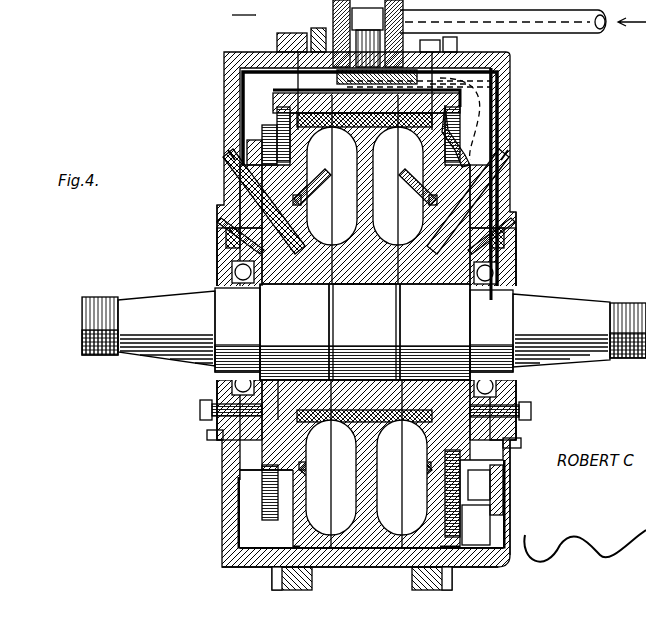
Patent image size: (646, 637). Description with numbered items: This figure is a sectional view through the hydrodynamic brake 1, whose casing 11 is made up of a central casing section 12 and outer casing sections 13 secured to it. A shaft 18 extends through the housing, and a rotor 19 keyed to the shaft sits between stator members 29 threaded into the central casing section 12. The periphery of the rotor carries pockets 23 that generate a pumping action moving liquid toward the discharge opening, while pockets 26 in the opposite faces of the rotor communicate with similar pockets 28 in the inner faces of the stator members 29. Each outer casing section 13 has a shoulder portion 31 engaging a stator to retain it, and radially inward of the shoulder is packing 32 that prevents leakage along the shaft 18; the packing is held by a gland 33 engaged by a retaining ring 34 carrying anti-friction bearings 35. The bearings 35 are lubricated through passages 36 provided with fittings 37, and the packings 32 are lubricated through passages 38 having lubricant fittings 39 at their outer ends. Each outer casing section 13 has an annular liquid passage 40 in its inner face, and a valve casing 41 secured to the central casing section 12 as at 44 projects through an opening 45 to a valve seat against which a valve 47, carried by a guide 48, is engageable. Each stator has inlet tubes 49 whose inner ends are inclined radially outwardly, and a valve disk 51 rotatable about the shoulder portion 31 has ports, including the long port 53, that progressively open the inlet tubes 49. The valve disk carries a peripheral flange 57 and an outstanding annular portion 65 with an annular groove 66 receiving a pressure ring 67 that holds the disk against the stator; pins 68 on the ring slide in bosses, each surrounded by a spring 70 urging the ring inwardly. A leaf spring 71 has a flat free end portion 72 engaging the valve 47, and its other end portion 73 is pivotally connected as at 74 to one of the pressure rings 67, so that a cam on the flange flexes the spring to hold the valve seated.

The machine 1 is at (244, 8).
The casing 11 is at (214, 548).
The central casing section 12 is at (392, 568).
The outer casing section 13 is at (506, 568).
The shaft 18 is at (364, 332).
The rotor 19 is at (372, 280).
The pockets 23 is at (366, 198).
The pockets 26 is at (365, 186).
The pockets 28 is at (366, 464).
The stator members 29 is at (352, 332).
The shoulder portion 31 is at (280, 420).
The packing 32 is at (305, 282).
The gland 33 is at (217, 265).
The retaining ring 34 is at (517, 388).
The anti-friction bearings 35 is at (517, 280).
The passages 36 is at (517, 245).
The fittings 37 is at (217, 228).
The passages 38 is at (226, 170).
The lubricant fittings 39 is at (228, 158).
The liquid passage 40 is at (240, 475).
The valve casing 41 is at (345, 10).
The securing point 44 is at (296, 36).
The opening 45 is at (467, 55).
The valve 47 is at (340, 77).
The guide 48 is at (368, 33).
The inlet tubes 49 is at (328, 176).
The valve disk 51 is at (280, 530).
The port 53 is at (517, 457).
The peripheral flange 57 is at (270, 570).
The annular portion 65 is at (517, 518).
The annular groove 66 is at (479, 485).
The pressure ring 67 is at (497, 510).
The pins 68 is at (240, 134).
The spring 70 is at (275, 140).
The leaf spring 71 is at (505, 72).
The flat free end portion 72 is at (335, 89).
The end portion 73 is at (487, 117).
The pivotal connection 74 is at (483, 150).